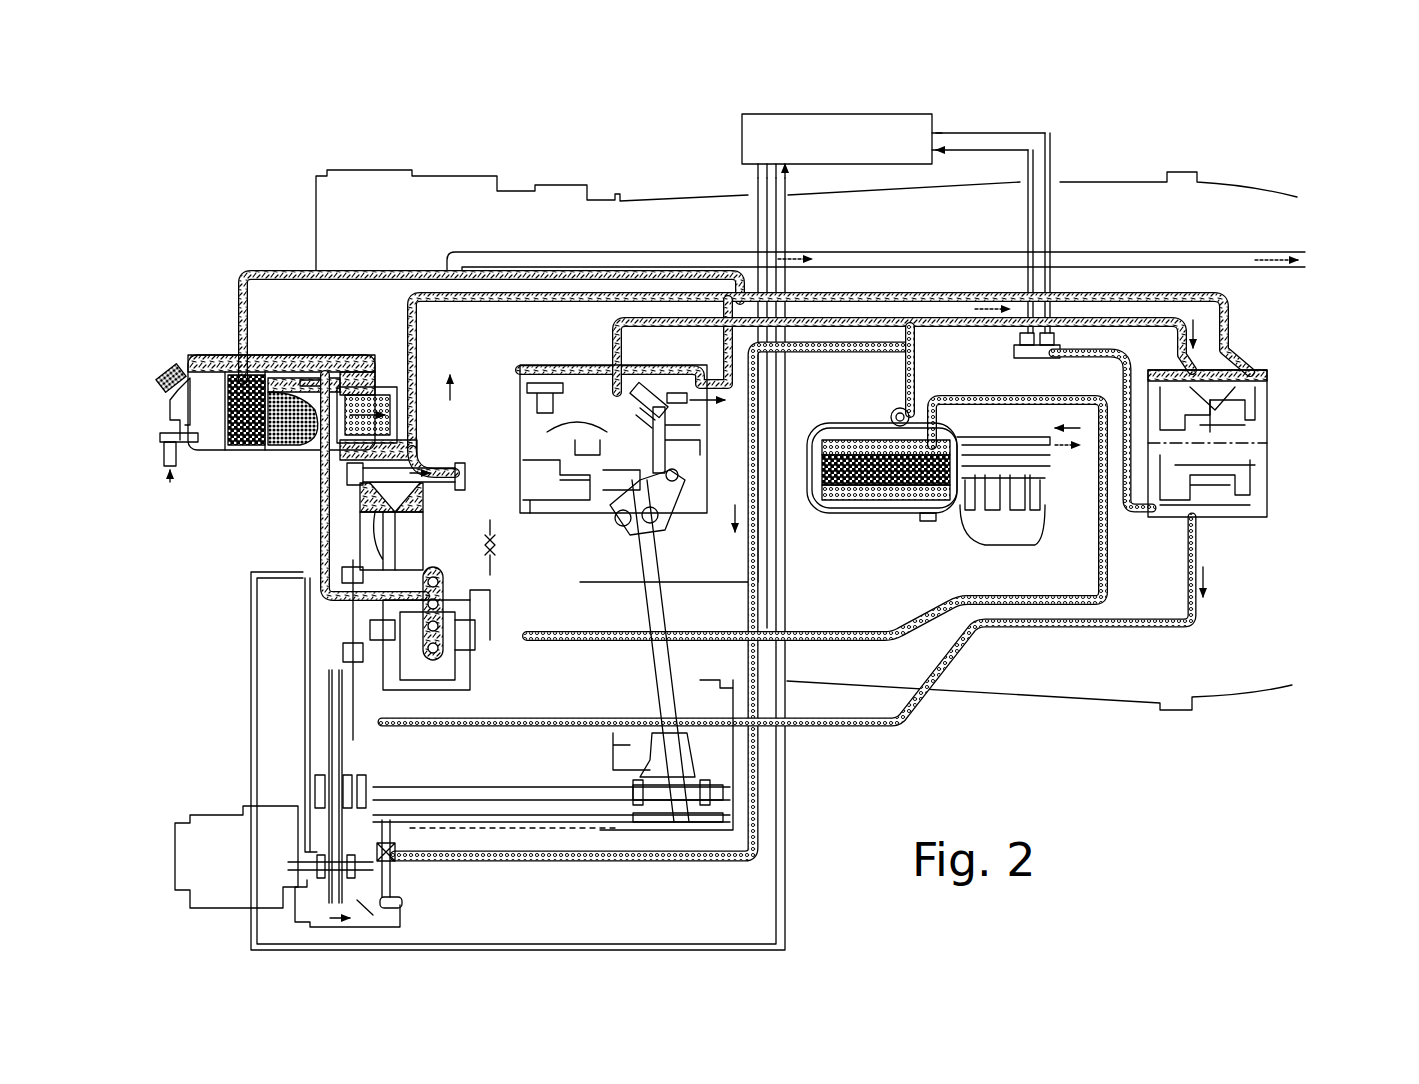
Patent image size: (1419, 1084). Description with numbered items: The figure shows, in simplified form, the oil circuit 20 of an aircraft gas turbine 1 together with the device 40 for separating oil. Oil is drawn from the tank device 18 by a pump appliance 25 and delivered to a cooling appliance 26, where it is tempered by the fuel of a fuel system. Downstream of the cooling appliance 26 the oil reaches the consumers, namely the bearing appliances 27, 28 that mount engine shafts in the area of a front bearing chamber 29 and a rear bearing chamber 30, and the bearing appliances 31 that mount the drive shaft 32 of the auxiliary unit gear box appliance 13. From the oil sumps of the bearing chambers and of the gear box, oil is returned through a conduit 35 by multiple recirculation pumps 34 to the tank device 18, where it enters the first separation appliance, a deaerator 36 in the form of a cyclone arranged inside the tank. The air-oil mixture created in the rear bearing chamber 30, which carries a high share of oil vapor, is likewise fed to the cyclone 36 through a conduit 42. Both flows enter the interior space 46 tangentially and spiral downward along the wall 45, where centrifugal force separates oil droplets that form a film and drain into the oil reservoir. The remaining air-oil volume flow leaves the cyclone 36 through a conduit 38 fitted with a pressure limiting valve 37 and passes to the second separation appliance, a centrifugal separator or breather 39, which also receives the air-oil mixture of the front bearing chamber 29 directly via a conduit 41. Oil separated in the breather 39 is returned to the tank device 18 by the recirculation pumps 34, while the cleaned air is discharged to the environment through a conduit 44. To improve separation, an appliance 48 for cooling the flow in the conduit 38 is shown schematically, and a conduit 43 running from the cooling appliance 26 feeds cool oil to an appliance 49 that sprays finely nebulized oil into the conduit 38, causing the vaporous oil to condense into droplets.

The aircraft gas turbine 1 is at (1340, 197).
The auxiliary unit gear box appliance 13 is at (380, 687).
The tank device 18 is at (268, 357).
The oil circuit 20 is at (210, 255).
The pump appliance 25 is at (323, 758).
The cooling appliance 26 is at (870, 530).
The bearing appliance 27 is at (577, 387).
The bearing appliance 28 is at (1258, 385).
The front bearing chamber 29 is at (650, 377).
The rear bearing chamber 30 is at (1268, 430).
The bearing appliances 31 is at (687, 750).
The drive shaft 32 is at (665, 705).
The recirculation pumps 34 is at (420, 633).
The conduit 35 is at (325, 540).
The deaerator 36 is at (292, 447).
The pressure limiting valve 37 is at (312, 357).
The conduit 38 is at (362, 385).
The breather 39 is at (363, 483).
The device for separating oil 40 is at (205, 480).
The conduit 41 is at (735, 297).
The conduit 42 is at (280, 270).
The conduit 43 is at (703, 357).
The conduit 44 is at (968, 260).
The wall 45 is at (172, 445).
The interior space 46 is at (267, 447).
The appliance for cooling 48 is at (343, 362).
The appliance for spraying in oil 49 is at (235, 412).